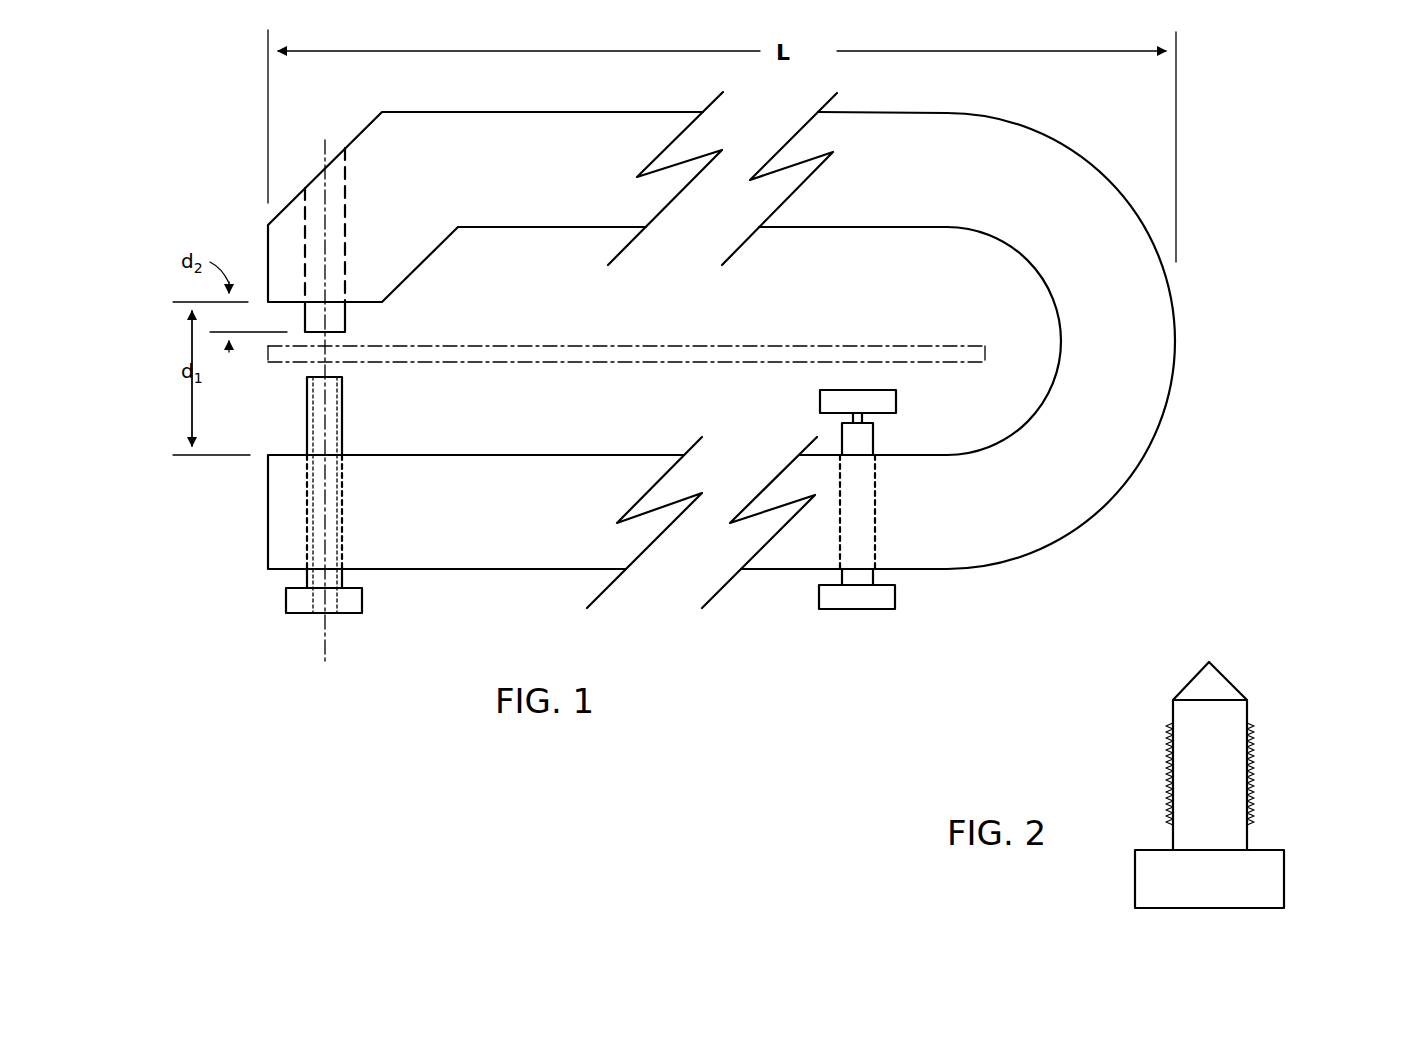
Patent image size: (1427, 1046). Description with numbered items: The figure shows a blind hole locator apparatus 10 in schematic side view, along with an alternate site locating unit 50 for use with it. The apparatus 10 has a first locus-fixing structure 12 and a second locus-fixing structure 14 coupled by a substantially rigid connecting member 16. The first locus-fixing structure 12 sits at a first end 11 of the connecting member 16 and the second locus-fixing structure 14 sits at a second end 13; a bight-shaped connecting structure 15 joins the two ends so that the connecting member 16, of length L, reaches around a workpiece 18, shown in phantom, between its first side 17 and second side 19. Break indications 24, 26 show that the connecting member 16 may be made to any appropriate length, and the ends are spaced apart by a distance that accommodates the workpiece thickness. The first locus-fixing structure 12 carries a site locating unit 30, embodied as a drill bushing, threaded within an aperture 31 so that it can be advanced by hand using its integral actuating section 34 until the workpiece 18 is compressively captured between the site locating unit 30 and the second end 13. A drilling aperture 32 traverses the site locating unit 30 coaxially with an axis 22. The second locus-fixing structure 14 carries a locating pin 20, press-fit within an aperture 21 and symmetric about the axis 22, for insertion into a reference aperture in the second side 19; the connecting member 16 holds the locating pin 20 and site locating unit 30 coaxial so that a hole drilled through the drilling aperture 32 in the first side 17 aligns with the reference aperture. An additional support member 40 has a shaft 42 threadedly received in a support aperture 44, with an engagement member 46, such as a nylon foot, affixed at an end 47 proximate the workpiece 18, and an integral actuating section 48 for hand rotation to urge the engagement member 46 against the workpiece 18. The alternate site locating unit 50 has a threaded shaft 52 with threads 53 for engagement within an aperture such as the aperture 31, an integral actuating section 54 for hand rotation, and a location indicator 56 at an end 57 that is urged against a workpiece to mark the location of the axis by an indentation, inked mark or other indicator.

In FIG. 1, the blind hole locator apparatus 10 is at (790, 678).
In FIG. 1, the first end 11 is at (268, 465).
In FIG. 1, the first locus-fixing structure 12 is at (240, 508).
In FIG. 1, the second end 13 is at (268, 243).
In FIG. 1, the second locus-fixing structure 14 is at (244, 202).
In FIG. 1, the bight-shaped connecting structure 15 is at (1174, 356).
In FIG. 1, the connecting member 16 is at (1033, 560).
In FIG. 1, the first side 17 is at (670, 365).
In FIG. 1, the workpiece 18 is at (860, 325).
In FIG. 1, the second side 19 is at (702, 346).
In FIG. 1, the locating pin 20 is at (345, 318).
In FIG. 1, the aperture 21 is at (326, 148).
In FIG. 1, the axis 22 is at (323, 130).
In FIG. 1, the break indication 24 is at (740, 125).
In FIG. 1, the break indication 26 is at (650, 620).
In FIG. 1, the site locating unit 30 is at (329, 520).
In FIG. 1, the aperture 31 is at (345, 535).
In FIG. 1, the drilling aperture 32 is at (325, 618).
In FIG. 1, the integral actuating section 34 is at (362, 600).
In FIG. 1, the support member 40 is at (861, 520).
In FIG. 1, the shaft 42 is at (873, 437).
In FIG. 1, the support aperture 44 is at (875, 500).
In FIG. 1, the engagement member 46 is at (896, 400).
In FIG. 1, the end 47 is at (842, 427).
In FIG. 1, the integral actuating section 48 is at (895, 600).
In FIG. 2, the site locating unit 50 is at (1180, 778).
In FIG. 2, the threaded shaft 52 is at (1173, 846).
In FIG. 2, the threads 53 is at (1255, 785).
In FIG. 2, the integral actuating section 54 is at (1135, 873).
In FIG. 2, the location indicator 56 is at (1222, 672).
In FIG. 2, the end 57 is at (1173, 702).